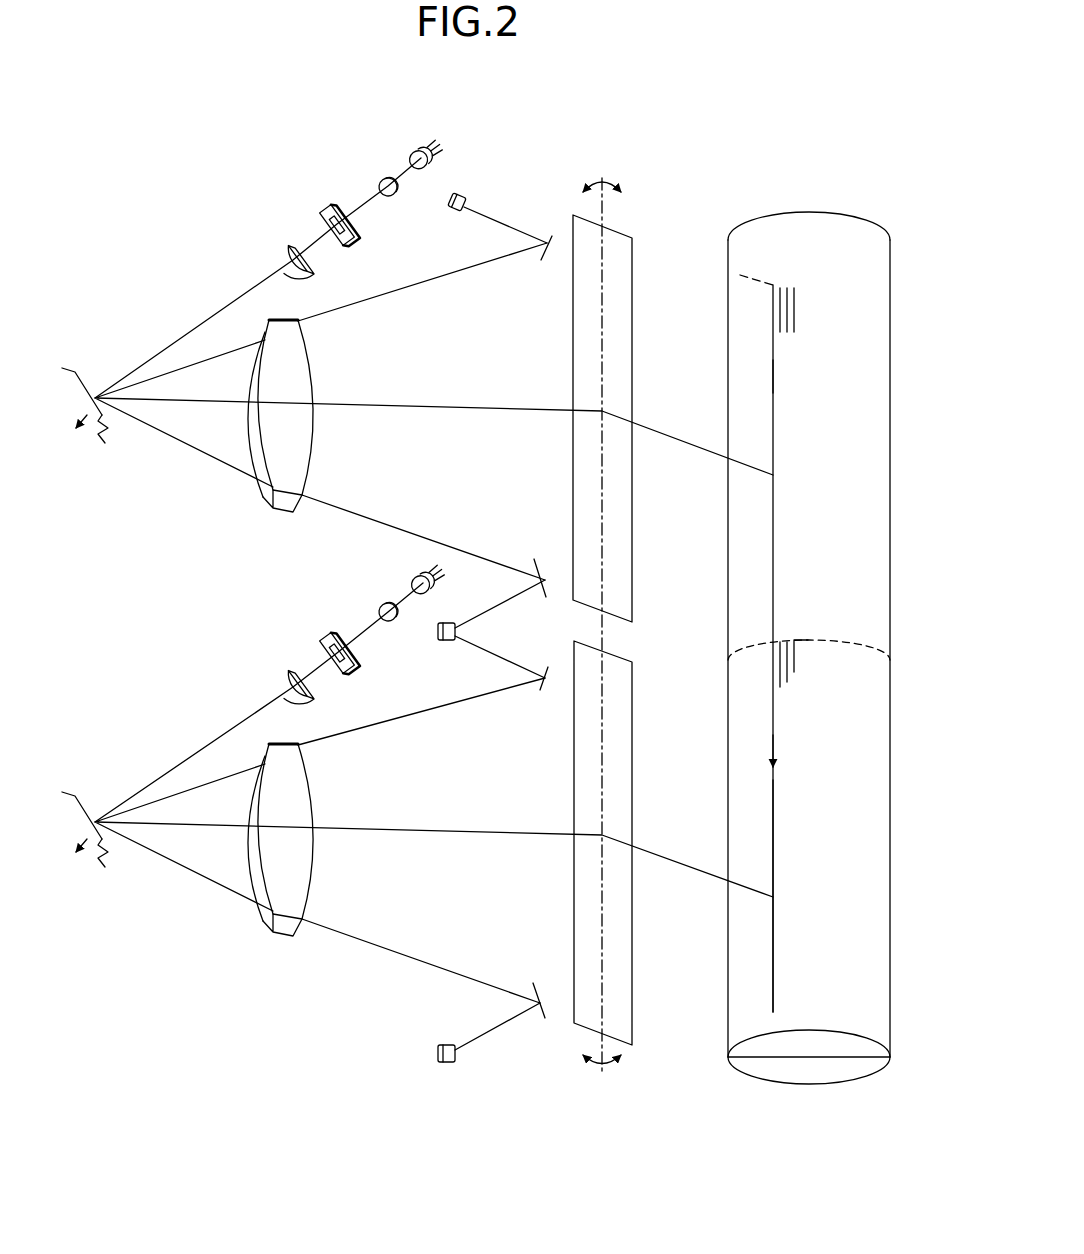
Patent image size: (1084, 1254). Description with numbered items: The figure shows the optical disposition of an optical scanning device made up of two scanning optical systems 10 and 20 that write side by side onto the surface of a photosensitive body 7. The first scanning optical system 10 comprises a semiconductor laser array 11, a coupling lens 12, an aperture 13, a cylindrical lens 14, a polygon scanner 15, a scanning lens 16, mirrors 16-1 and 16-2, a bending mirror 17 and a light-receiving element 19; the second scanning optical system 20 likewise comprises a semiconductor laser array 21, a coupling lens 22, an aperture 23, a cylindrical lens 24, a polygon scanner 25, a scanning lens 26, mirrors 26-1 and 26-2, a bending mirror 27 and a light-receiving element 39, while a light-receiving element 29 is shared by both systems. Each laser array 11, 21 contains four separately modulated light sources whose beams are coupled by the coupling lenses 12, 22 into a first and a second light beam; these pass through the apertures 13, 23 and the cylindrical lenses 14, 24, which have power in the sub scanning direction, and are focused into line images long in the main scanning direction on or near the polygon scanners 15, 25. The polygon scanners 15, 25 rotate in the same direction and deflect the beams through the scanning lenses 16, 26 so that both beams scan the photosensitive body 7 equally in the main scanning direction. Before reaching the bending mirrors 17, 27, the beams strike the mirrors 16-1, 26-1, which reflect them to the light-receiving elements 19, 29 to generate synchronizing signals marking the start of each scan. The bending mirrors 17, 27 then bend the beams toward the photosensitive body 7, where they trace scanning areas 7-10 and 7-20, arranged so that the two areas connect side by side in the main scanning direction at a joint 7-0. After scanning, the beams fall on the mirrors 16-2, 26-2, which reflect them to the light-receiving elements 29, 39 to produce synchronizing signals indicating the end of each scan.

The photosensitive body 7 is at (812, 212).
The joint 7-0 is at (797, 641).
The scanning area 7-10 is at (793, 497).
The scanning area 7-20 is at (793, 818).
The scanning optical system 10 is at (128, 247).
The semiconductor laser array 11 is at (412, 155).
The coupling lens 12 is at (378, 183).
The aperture 13 is at (324, 220).
The cylindrical lens 14 is at (278, 257).
The polygon scanner 15 is at (90, 373).
The scanning lens 16 is at (273, 485).
The mirror 16-1 is at (543, 250).
The mirror 16-2 is at (538, 563).
The bending mirror 17 is at (625, 316).
The light-receiving element 19 is at (470, 195).
The scanning optical system 20 is at (128, 673).
The semiconductor laser array 21 is at (413, 582).
The coupling lens 22 is at (378, 609).
The aperture 23 is at (320, 648).
The cylindrical lens 24 is at (279, 682).
The polygon scanner 25 is at (90, 797).
The scanning lens 26 is at (273, 909).
The mirror 26-1 is at (548, 675).
The mirror 26-2 is at (535, 987).
The bending mirror 27 is at (625, 741).
The light-receiving element 29 is at (440, 632).
The light-receiving element 39 is at (448, 1045).